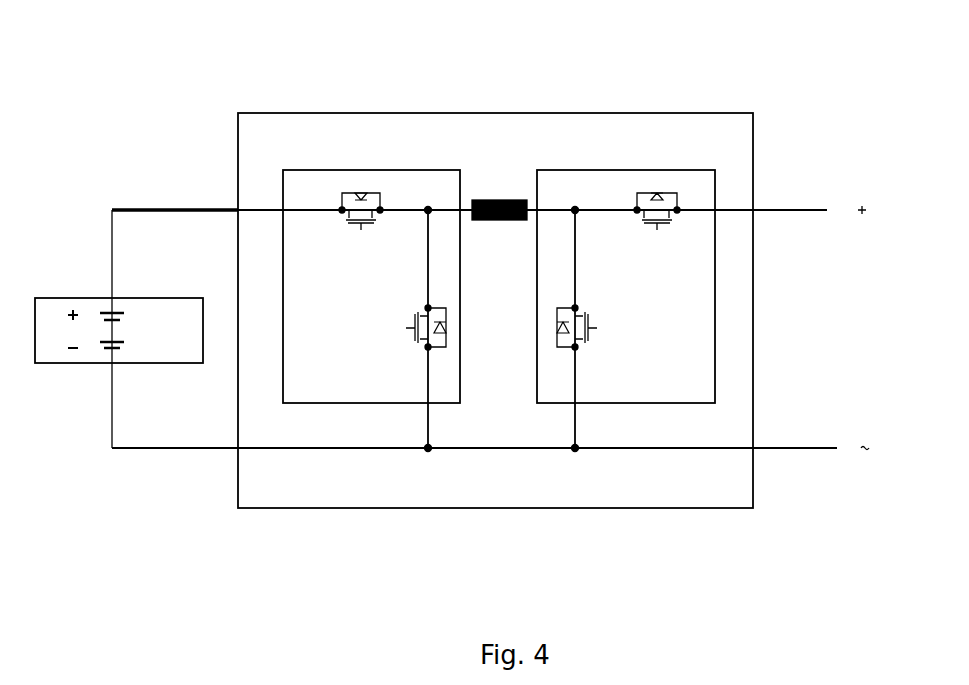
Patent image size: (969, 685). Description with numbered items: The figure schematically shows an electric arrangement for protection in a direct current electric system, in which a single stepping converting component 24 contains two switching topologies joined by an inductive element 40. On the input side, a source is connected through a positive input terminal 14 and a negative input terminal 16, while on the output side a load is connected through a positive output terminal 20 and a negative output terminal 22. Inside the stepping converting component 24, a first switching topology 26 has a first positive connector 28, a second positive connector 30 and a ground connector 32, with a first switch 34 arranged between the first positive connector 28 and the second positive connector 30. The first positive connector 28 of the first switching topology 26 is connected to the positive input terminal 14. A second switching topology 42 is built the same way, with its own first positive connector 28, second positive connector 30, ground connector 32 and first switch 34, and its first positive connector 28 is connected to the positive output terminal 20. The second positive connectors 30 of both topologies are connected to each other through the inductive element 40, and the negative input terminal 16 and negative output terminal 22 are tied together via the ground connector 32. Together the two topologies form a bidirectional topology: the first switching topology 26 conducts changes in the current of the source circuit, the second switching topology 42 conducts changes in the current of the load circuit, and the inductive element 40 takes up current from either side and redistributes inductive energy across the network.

The positive input terminal 14 is at (124, 208).
The negative input terminal 16 is at (128, 450).
The positive output terminal 20 is at (810, 208).
The negative output terminal 22 is at (818, 450).
The stepping converting component 24 is at (302, 511).
The first switching topology 26 is at (378, 403).
The first positive connector 28 is at (260, 208).
The second positive connector 30 is at (400, 208).
The ground connector 32 is at (506, 450).
The first switch 34 is at (360, 195).
The inductive element 40 is at (506, 200).
The second switching topology 42 is at (640, 403).